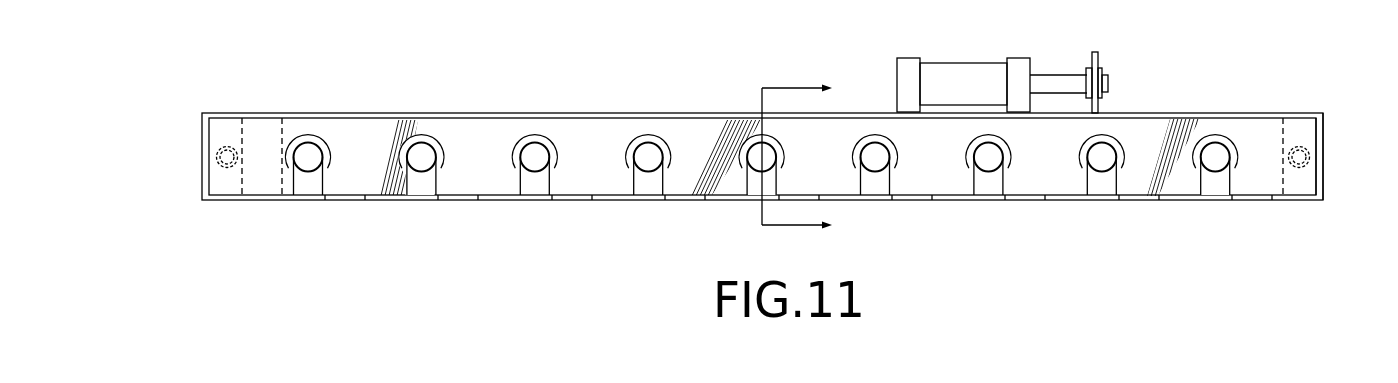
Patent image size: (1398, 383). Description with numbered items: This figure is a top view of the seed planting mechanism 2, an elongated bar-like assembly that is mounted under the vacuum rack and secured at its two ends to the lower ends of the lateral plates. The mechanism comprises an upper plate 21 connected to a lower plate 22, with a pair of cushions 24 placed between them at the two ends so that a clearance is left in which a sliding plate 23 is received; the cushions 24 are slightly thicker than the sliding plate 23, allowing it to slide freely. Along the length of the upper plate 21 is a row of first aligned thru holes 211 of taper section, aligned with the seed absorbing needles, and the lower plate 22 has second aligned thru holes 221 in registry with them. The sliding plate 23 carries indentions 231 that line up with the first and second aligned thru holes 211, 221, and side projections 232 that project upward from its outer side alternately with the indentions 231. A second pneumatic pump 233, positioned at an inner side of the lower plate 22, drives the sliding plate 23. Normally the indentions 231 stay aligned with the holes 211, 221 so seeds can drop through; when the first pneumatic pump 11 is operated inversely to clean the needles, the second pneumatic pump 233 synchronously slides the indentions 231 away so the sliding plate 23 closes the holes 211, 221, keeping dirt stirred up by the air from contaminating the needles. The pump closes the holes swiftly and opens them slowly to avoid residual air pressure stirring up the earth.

The seed planting mechanism 2 is at (357, 101).
The upper plate 21 is at (1250, 131).
The lower plate 22 is at (1323, 131).
The sliding plate 23 is at (369, 199).
The cushions 24 is at (222, 178).
The first pneumatic pump 11 is at (815, 158).
The indentions 231 is at (762, 114).
The first aligned thru holes 211 is at (762, 114).
The second aligned thru holes 221 is at (420, 152).
The side projections 232 is at (334, 198).
The second pneumatic pump 233 is at (971, 78).